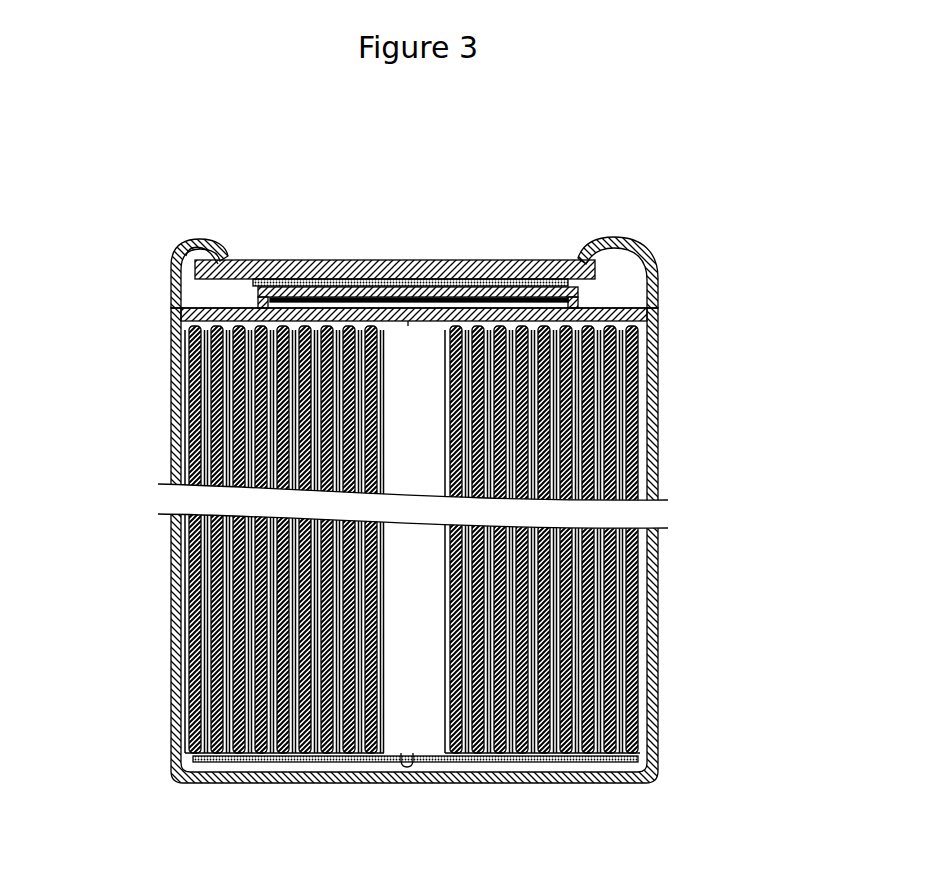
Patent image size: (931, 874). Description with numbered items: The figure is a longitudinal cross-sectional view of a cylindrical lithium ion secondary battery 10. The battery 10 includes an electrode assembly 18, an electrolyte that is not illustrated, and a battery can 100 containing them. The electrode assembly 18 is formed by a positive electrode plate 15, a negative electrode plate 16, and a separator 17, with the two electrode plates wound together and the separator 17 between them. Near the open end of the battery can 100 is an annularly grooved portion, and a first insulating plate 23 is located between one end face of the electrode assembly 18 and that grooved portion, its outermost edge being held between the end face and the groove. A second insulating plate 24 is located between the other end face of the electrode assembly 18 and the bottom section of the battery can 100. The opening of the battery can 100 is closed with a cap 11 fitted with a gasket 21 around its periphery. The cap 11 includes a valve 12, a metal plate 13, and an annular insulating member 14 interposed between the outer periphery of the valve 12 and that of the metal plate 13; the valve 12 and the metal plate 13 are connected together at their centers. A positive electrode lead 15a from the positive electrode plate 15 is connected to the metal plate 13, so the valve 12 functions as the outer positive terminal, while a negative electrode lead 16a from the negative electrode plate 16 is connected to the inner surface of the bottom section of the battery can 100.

The battery 10 is at (133, 138).
The battery can 100 is at (163, 452).
The cap 11 is at (506, 239).
The valve 12 is at (440, 258).
The metal plate 13 is at (512, 295).
The annular insulating member 14 is at (547, 247).
The gasket 21 is at (163, 248).
The first insulating plate 23 is at (175, 296).
The electrode assembly 18 is at (501, 539).
The positive electrode plate 15 is at (605, 548).
The negative electrode plate 16 is at (632, 598).
The separator 17 is at (645, 645).
The positive electrode lead 15a is at (405, 305).
The negative electrode lead 16a is at (398, 758).
The second insulating plate 24 is at (550, 755).